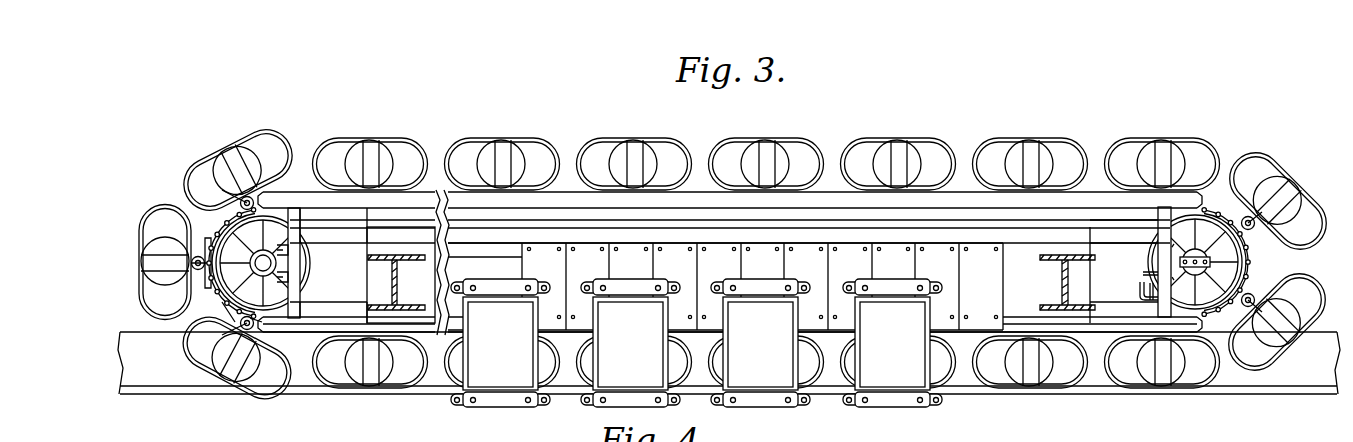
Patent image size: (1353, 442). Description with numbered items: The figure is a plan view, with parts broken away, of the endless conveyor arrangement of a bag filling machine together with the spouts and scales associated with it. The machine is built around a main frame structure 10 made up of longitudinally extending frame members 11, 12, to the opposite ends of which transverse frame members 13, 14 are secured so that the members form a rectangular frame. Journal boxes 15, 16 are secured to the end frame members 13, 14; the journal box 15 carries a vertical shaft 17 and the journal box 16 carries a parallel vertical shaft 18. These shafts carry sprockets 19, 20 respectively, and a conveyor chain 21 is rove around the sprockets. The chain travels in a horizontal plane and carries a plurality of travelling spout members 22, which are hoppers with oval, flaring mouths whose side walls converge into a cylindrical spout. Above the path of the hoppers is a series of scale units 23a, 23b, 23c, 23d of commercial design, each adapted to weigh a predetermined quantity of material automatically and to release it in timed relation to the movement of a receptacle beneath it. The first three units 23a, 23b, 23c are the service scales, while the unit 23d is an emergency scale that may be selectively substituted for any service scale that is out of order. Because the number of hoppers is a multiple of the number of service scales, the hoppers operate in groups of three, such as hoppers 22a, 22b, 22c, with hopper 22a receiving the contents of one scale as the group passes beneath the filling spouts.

The main frame structure 10 is at (555, 240).
The longitudinally extending frame member 11 is at (392, 222).
The longitudinally extending frame member 12 is at (410, 315).
The transverse frame member 13 is at (296, 265).
The transverse frame member 14 is at (1160, 236).
The journal box 15 is at (286, 290).
The journal box 16 is at (1138, 296).
The vertical shaft 17 is at (272, 260).
The vertical shaft 18 is at (1176, 250).
The sprocket 19 is at (232, 235).
The sprocket 20 is at (1207, 222).
The conveyor chain 21 is at (222, 302).
The travelling spout member 22 is at (806, 139).
The travelling hopper 22a is at (1053, 372).
The travelling hopper 22b is at (1185, 375).
The travelling hopper 22c is at (1298, 290).
The scale unit 23a is at (890, 368).
The scale unit 23b is at (765, 370).
The scale unit 23c is at (640, 365).
The emergency scale unit 23d is at (510, 370).